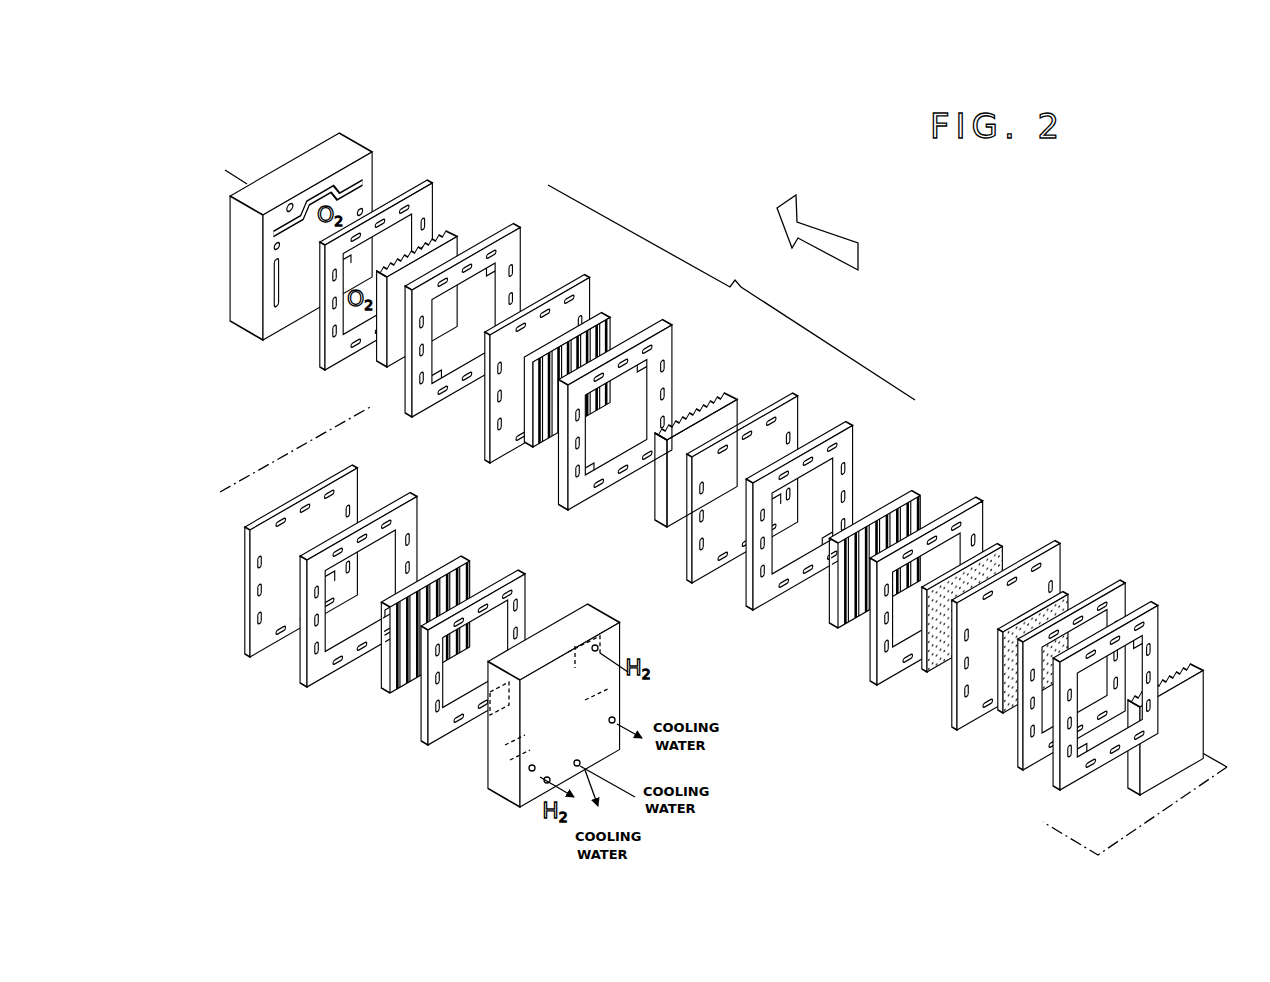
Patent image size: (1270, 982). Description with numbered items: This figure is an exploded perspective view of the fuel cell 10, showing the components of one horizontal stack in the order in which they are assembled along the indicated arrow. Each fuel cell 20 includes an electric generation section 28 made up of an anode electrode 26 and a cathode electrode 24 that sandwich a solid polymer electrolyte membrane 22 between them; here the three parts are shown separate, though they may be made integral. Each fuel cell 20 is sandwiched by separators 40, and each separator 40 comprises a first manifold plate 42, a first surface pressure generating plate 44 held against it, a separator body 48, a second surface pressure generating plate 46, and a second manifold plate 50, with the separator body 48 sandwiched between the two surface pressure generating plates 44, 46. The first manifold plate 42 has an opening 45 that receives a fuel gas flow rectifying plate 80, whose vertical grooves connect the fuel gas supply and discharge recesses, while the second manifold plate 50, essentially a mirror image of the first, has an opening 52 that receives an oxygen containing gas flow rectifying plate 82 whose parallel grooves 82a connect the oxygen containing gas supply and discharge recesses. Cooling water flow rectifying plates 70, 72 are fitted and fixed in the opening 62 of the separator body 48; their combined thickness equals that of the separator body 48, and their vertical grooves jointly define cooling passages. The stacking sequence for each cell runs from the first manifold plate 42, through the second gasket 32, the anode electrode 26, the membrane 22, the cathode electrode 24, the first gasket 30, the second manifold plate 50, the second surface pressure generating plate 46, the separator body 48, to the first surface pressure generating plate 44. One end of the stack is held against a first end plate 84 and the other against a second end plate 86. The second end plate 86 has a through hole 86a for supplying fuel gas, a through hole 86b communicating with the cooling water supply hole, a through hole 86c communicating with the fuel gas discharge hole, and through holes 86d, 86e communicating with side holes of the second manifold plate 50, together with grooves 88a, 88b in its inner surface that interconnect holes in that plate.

The fuel cell stack 10 is at (997, 314).
The fuel cell 20 is at (1170, 522).
The solid polymer electrolyte membrane 22 is at (1061, 543).
The cathode electrode 24 is at (1001, 549).
The anode electrode 26 is at (1073, 590).
The electric generation section 28 is at (1133, 525).
The first gasket 30 is at (984, 498).
The second gasket 32 is at (437, 206).
The separator 40 is at (731, 292).
The first manifold plate 42 is at (523, 256).
The first surface pressure generating plate 44 is at (591, 288).
The opening 45 is at (462, 317).
The second surface pressure generating plate 46 is at (804, 425).
The separator body 48 is at (676, 352).
The second manifold plate 50 is at (858, 449).
The opening 52 is at (802, 527).
The opening 62 is at (615, 432).
The cooling water flow rectifying plate 70 is at (582, 370).
The cooling water flow rectifying plate 72 is at (714, 446).
The fuel gas flow rectifying plate 80 is at (793, 514).
The oxygen containing gas flow rectifying plate 82 is at (915, 504).
The parallel grooves 82a is at (858, 630).
The first end plate 84 is at (325, 227).
The second end plate 86 is at (594, 717).
The through hole 86a is at (599, 650).
The through hole 86b is at (581, 764).
The through hole 86c is at (547, 784).
The through hole 86d is at (618, 719).
The through hole 86e is at (532, 772).
The groove 88a is at (530, 700).
The groove 88b is at (520, 716).